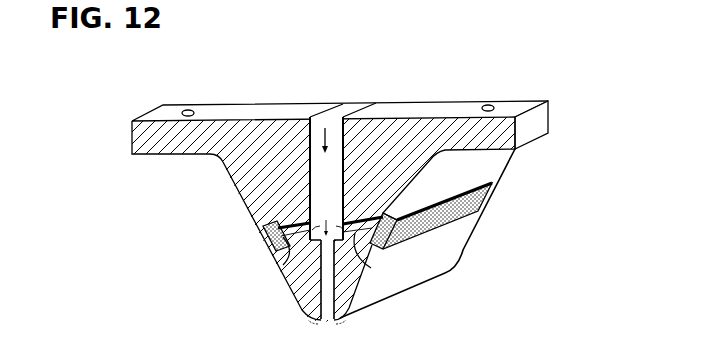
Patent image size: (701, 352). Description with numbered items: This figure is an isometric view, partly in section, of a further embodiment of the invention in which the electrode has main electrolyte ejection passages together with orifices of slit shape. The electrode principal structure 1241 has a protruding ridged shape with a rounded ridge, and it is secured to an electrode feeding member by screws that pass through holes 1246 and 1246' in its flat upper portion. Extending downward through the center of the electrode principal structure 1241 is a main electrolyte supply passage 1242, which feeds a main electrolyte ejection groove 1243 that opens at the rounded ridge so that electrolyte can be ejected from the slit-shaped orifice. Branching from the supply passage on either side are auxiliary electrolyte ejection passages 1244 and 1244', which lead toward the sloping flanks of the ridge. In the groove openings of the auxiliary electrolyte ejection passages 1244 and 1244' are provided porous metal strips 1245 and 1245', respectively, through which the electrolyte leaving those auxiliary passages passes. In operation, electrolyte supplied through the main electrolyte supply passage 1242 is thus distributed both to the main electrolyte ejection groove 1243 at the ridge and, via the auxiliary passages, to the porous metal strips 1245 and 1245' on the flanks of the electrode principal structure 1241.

The electrode principal structure 1241 is at (463, 100).
The main electrolyte supply passage 1242 is at (335, 172).
The main electrolyte ejection groove 1243 is at (345, 315).
The auxiliary electrolyte ejection passage 1244 is at (387, 250).
The auxiliary electrolyte ejection passage 1244' is at (261, 256).
The porous metal strip 1245 is at (462, 216).
The porous metal strip 1245' is at (255, 237).
The hole 1246 is at (523, 87).
The hole 1246' is at (184, 92).